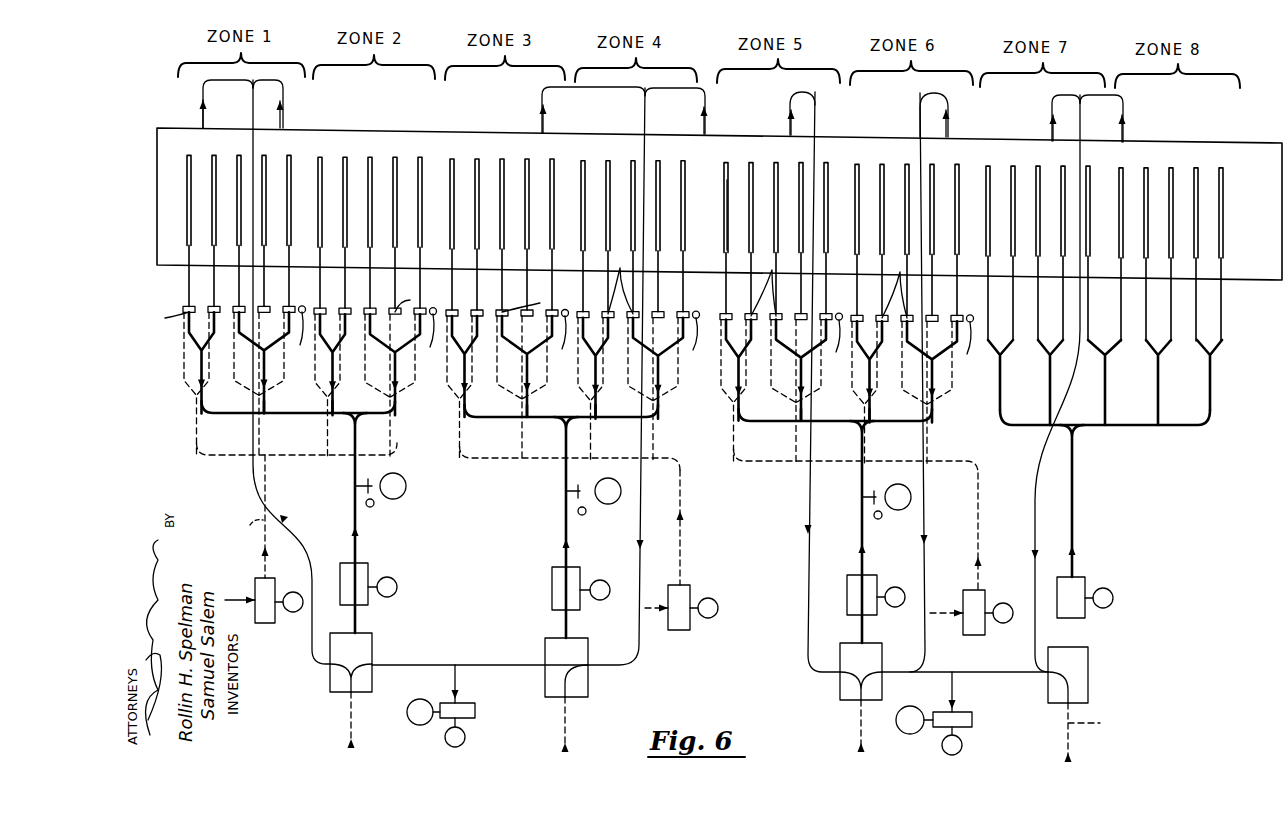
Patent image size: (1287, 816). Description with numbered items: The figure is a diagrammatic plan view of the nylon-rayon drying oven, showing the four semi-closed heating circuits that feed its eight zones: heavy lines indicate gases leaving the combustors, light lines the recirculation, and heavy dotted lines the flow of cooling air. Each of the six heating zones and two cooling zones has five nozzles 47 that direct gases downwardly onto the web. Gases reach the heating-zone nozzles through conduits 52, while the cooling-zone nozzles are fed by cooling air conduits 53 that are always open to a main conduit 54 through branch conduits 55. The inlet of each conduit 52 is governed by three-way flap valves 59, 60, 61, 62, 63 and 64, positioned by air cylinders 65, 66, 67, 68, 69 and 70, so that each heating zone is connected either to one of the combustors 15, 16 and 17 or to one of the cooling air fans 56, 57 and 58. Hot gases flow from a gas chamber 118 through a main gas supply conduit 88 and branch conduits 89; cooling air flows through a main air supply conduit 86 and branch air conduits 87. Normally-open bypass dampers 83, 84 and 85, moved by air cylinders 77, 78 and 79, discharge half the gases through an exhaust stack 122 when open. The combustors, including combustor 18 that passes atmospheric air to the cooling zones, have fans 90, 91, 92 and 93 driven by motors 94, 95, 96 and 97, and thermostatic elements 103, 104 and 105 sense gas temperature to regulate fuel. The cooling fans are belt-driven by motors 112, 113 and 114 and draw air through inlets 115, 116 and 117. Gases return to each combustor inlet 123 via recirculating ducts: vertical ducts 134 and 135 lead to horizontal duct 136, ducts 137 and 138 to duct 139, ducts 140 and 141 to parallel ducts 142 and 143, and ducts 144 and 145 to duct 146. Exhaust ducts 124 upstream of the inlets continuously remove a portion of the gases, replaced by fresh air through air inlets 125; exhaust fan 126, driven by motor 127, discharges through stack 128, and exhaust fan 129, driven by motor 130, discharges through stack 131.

The combustor 15 is at (368, 640).
The combustor 16 is at (545, 650).
The combustor 17 is at (872, 650).
The combustor 18 is at (1088, 658).
The nozzle 47 is at (418, 160).
The conduit 52 is at (183, 307).
The cooling air conduit 53 is at (962, 320).
The main conduit 54 is at (1075, 502).
The branch conduit 55 is at (1002, 415).
The cooling air fan 56 is at (270, 622).
The cooling air fan 57 is at (684, 630).
The cooling air fan 58 is at (972, 635).
The flap valve 59 is at (195, 313).
The flap valve 60 is at (398, 310).
The flap valve 61 is at (527, 312).
The flap valve 62 is at (620, 283).
The flap valve 63 is at (770, 285).
The flap valve 64 is at (893, 287).
The air cylinder 65 is at (294, 338).
The air cylinder 66 is at (424, 340).
The air cylinder 67 is at (555, 341).
The air cylinder 68 is at (689, 343).
The air cylinder 69 is at (830, 344).
The air cylinder 70 is at (964, 348).
The air cylinder 77 is at (375, 505).
The air cylinder 78 is at (584, 515).
The air cylinder 79 is at (879, 519).
The bypass valve 83 is at (360, 487).
The bypass valve 84 is at (570, 492).
The bypass valve 85 is at (866, 498).
The main air supply conduit 86 is at (990, 522).
The branch air conduit 87 is at (240, 445).
The main gas supply conduit 88 is at (352, 472).
The branch conduit 89 is at (282, 412).
The fan 90 is at (368, 575).
The fan 91 is at (552, 582).
The fan 92 is at (847, 603).
The fan 93 is at (1082, 578).
The motor 94 is at (397, 590).
The motor 95 is at (608, 598).
The motor 96 is at (905, 592).
The motor 97 is at (1113, 597).
The thermostatic element 103 is at (178, 262).
The thermostatic element 104 is at (452, 248).
The thermostatic element 105 is at (726, 250).
The electric motor 112 is at (268, 588).
The electric motor 113 is at (705, 598).
The electric motor 114 is at (992, 605).
The inlet 115 is at (245, 600).
The inlet 116 is at (668, 594).
The inlet 117 is at (963, 628).
The gas chamber 118 is at (358, 545).
The exhaust stack 122 is at (407, 492).
The inlet 123 is at (345, 685).
The exhaust duct 124 is at (455, 660).
The air inlet 125 is at (348, 720).
The exhaust fan 126 is at (475, 712).
The motor 127 is at (465, 740).
The exhaust stack 128 is at (418, 725).
The exhaust fan 129 is at (972, 720).
The motor 130 is at (960, 752).
The exhaust stack 131 is at (910, 734).
The recirculating duct 134 is at (203, 117).
The recirculating duct 135 is at (285, 118).
The recirculating duct 136 is at (287, 525).
The duct 137 is at (542, 120).
The duct 138 is at (706, 105).
The recirculating duct 139 is at (618, 668).
The recirculating duct 140 is at (790, 120).
The recirculating duct 141 is at (947, 120).
The recirculating duct 142 is at (808, 598).
The recirculating duct 143 is at (925, 532).
The recirculating duct 144 is at (1052, 128).
The recirculating duct 145 is at (1125, 122).
The recirculating duct 146 is at (1045, 470).